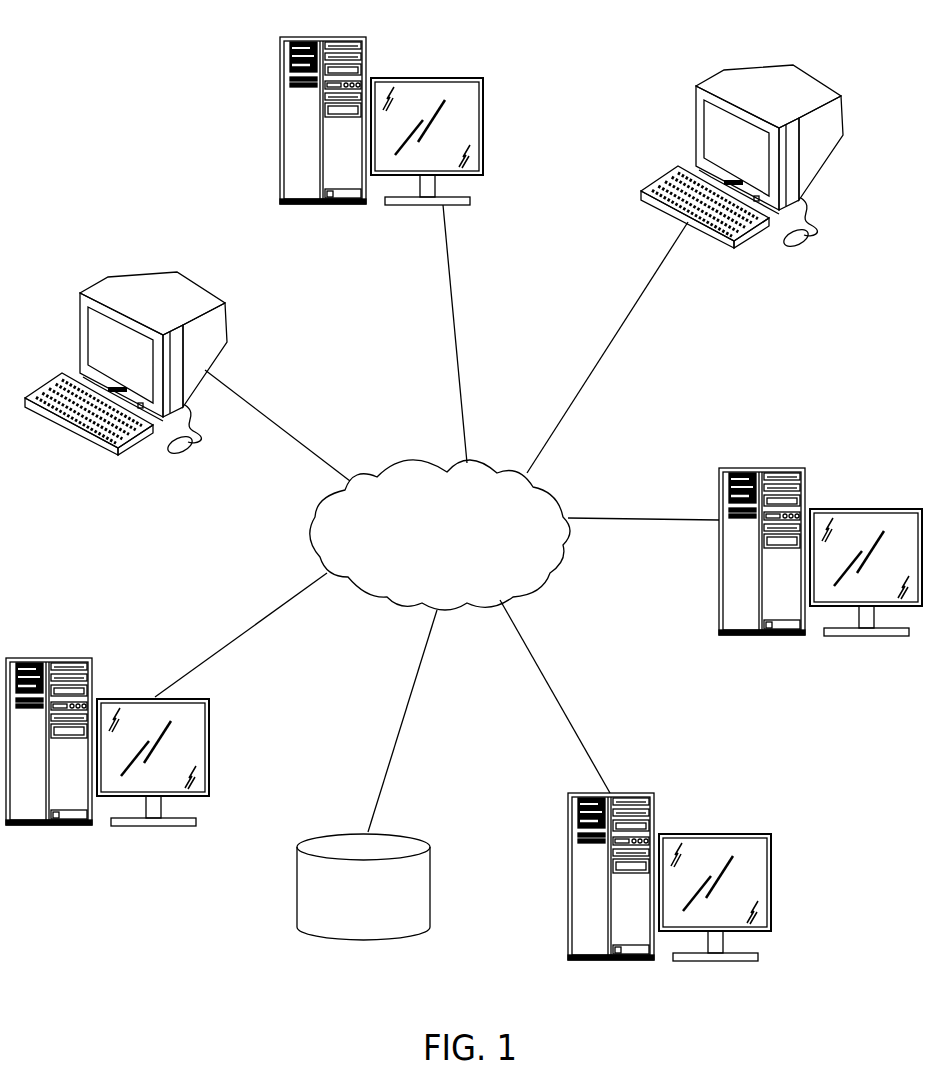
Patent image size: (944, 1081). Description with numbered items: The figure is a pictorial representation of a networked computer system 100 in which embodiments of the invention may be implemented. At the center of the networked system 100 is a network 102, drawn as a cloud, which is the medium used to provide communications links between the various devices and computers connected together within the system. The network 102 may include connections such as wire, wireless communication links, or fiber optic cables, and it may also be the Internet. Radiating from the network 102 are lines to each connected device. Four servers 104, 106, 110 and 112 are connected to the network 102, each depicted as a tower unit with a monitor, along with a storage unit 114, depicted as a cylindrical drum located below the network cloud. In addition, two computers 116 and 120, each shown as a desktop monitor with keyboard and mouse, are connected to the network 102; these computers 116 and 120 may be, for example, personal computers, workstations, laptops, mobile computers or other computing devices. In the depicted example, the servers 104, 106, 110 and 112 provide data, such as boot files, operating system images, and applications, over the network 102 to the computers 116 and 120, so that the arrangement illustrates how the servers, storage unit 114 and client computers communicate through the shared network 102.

The networked computer system 100 is at (124, 111).
The network 102 is at (424, 582).
The server 104 is at (365, 52).
The server 106 is at (778, 467).
The server 110 is at (653, 810).
The server 112 is at (62, 658).
The storage unit 114 is at (362, 937).
The computer 116 is at (157, 278).
The computer 120 is at (771, 73).